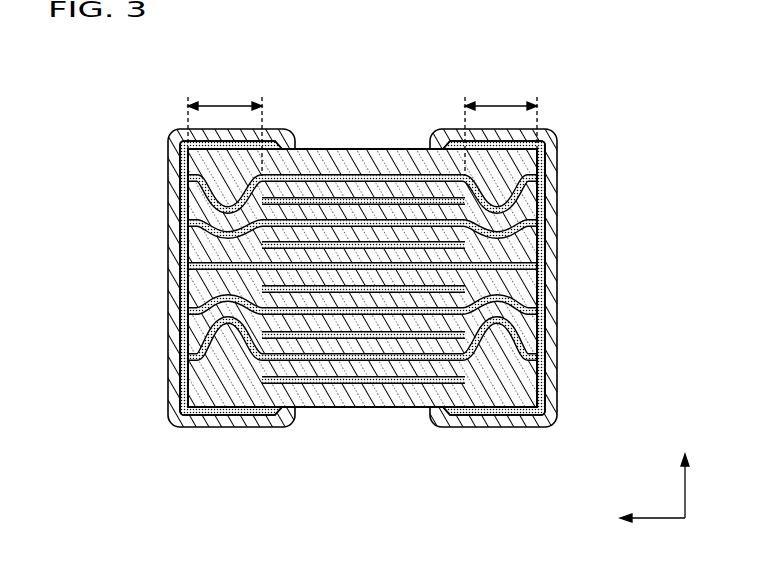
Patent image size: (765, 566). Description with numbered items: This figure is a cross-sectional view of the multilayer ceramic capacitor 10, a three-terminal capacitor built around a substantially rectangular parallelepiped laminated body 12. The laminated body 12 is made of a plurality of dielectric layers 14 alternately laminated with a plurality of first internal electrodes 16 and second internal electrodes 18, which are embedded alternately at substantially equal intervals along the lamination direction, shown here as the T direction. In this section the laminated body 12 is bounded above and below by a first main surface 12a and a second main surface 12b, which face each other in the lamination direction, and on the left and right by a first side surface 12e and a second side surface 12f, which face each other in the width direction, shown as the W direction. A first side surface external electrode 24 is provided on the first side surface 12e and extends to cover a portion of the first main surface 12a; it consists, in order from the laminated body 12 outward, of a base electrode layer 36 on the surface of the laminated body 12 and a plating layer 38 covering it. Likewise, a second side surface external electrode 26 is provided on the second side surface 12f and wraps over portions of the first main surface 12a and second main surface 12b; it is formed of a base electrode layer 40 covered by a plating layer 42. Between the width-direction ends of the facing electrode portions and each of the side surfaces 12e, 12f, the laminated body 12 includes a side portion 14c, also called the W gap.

The multilayer ceramic capacitor 10 is at (572, 108).
The laminated body 12 is at (408, 147).
The first main surface 12a is at (326, 148).
The second main surface 12b is at (310, 408).
The first side surface 12e is at (186, 203).
The second side surface 12f is at (546, 198).
The dielectric layers 14 is at (407, 207).
The side portion (W gap) 14c is at (362, 123).
The first internal electrodes 16 is at (327, 338).
The second internal electrodes 18 is at (382, 313).
The first side surface external electrode 24 is at (240, 483).
The second side surface external electrode 26 is at (563, 483).
The base electrode layer 36 is at (240, 412).
The plating layer 38 is at (196, 423).
The base electrode layer 40 is at (483, 413).
The plating layer 42 is at (530, 424).